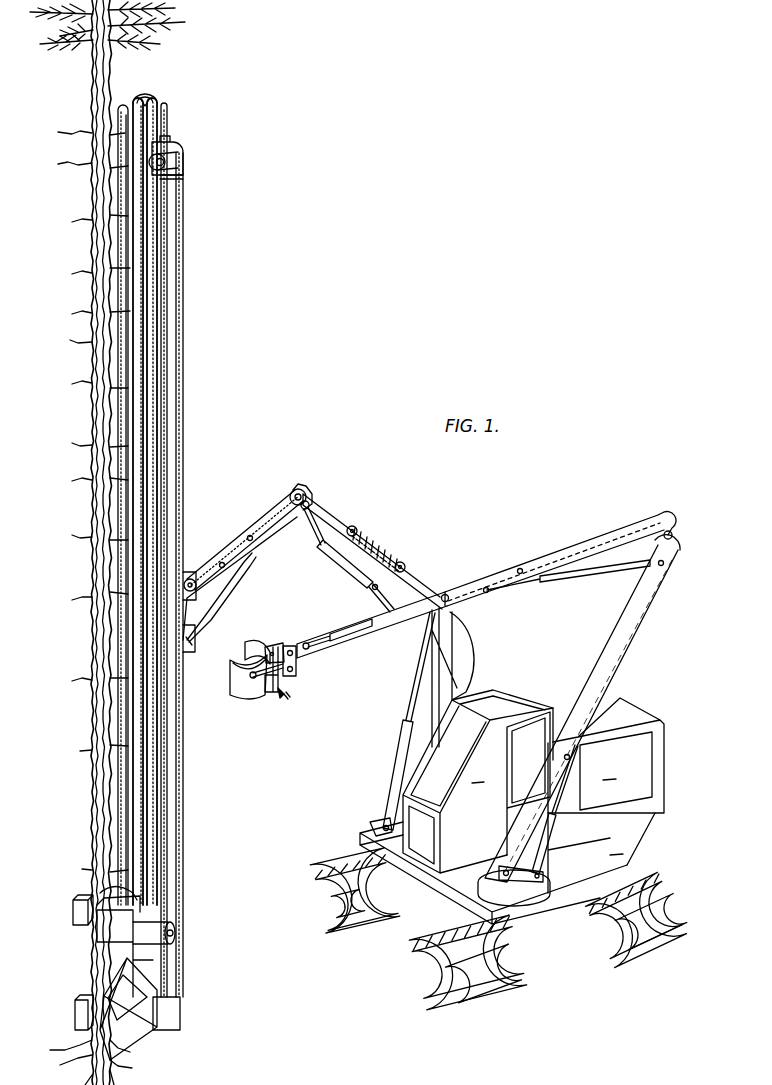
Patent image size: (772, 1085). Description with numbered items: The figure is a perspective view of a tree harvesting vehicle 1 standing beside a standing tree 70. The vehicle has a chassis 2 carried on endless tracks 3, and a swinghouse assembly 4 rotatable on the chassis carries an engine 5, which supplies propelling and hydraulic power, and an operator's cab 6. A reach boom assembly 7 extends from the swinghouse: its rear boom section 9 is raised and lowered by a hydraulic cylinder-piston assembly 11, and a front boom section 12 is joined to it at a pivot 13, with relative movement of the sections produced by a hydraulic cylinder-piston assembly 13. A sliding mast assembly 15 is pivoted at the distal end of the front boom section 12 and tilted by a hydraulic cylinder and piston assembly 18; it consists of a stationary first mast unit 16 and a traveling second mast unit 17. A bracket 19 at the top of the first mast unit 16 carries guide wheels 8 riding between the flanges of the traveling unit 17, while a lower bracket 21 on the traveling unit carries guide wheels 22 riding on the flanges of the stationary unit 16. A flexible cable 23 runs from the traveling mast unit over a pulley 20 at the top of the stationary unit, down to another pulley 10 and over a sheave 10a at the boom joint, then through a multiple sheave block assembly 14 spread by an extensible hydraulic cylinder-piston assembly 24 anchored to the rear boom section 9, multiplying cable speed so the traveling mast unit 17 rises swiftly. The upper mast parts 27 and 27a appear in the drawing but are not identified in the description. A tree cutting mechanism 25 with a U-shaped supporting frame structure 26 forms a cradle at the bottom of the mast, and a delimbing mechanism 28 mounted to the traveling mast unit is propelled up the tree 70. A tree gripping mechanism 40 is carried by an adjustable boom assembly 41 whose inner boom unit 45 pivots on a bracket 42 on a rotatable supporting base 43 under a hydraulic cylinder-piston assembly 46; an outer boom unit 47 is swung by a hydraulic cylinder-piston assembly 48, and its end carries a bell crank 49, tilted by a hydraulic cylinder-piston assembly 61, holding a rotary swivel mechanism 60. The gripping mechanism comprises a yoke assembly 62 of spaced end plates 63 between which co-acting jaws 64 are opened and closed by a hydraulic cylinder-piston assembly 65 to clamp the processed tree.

The mobile vehicle and carriage 1 is at (509, 811).
The chassis or frame sub-structure 2 is at (445, 905).
The endless tracks 3 is at (660, 860).
The swinghouse assembly 4 is at (601, 853).
The engine 5 is at (606, 755).
The operator's cab 6 is at (478, 781).
The articulated or reach boom assembly 7 is at (372, 544).
The guide wheels 8 is at (178, 162).
The first arm or rear boom section 9 is at (372, 622).
The pulley 10 is at (192, 578).
The sheave or pulley 10a is at (300, 485).
The hydraulic cylinder-piston assembly 11 is at (390, 768).
The second or front boom section 12 is at (285, 508).
The pivot and hydraulic cylinder-piston assembly 13 is at (308, 503).
The multiple sheave block assembly 14 is at (391, 531).
The sliding mast assembly 15 is at (145, 565).
The stationary first mast unit 16 is at (170, 262).
The traveling second mast unit 17 is at (152, 130).
The hydraulic cylinder and piston assembly 18 is at (222, 592).
The bracket 19 is at (186, 176).
The sheave or pulley 20 is at (189, 165).
The lower bracket 21 is at (168, 946).
The guide wheels 22 is at (176, 930).
The flexible cable 23 is at (184, 330).
The extensible hydraulic cylinder-piston assembly 24 is at (429, 585).
The tree cutting mechanism 25 is at (70, 1000).
The supporting frame structure 26 is at (135, 1045).
The mast tube 27 is at (124, 98).
The mast top connector 27a is at (145, 97).
The delimbing mechanism 28 is at (68, 912).
The tree gripping mechanism 40 is at (264, 677).
The adjustable boom assembly 41 is at (596, 718).
The bracket 42 is at (545, 858).
The supporting base 43 is at (538, 882).
The inner or first boom unit 45 is at (600, 668).
The hydraulic cylinder-piston assembly 46 is at (553, 823).
The outer or second boom unit 47 is at (607, 545).
The hydraulic cylinder-piston assembly 48 is at (605, 575).
The bell crank 49 is at (298, 668).
The rotary swivel mechanism 60 is at (284, 690).
The hydraulic cylinder-piston assembly 61 is at (318, 640).
The yoke assembly 62 is at (290, 700).
The spaced end plates 63 is at (276, 645).
The co-acting jaws or claws 64 is at (255, 640).
The hydraulic cylinder-piston assembly 65 is at (238, 673).
The standing tree 70 is at (91, 529).